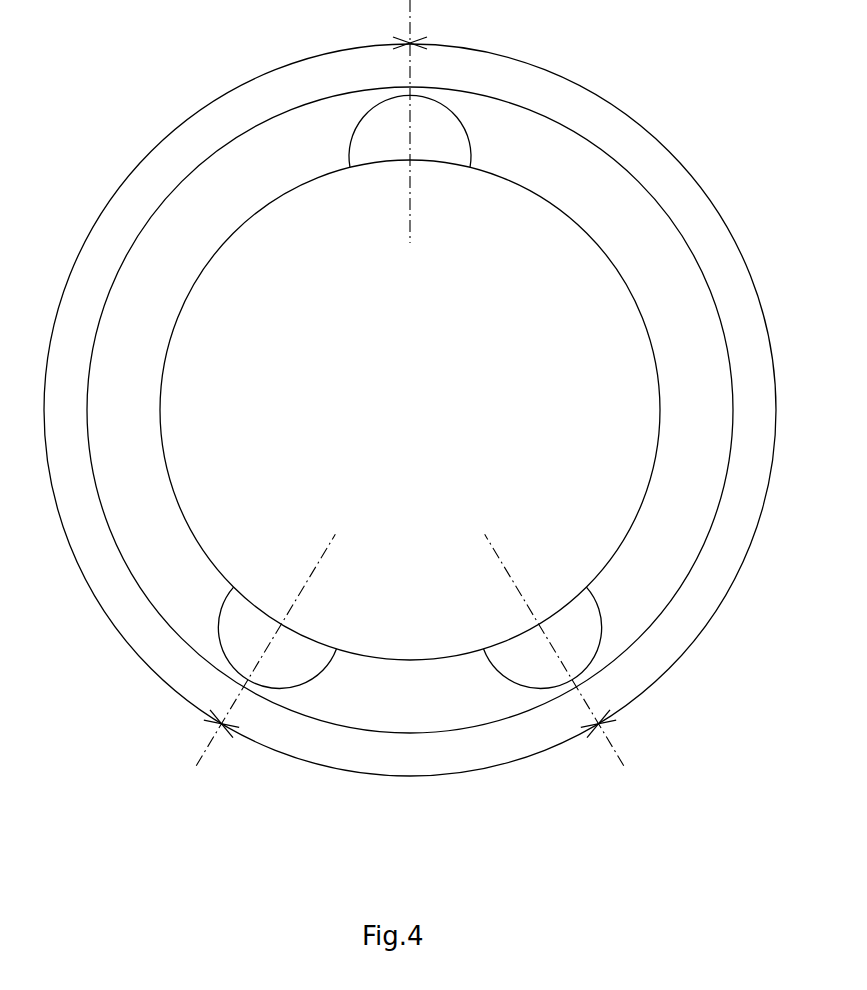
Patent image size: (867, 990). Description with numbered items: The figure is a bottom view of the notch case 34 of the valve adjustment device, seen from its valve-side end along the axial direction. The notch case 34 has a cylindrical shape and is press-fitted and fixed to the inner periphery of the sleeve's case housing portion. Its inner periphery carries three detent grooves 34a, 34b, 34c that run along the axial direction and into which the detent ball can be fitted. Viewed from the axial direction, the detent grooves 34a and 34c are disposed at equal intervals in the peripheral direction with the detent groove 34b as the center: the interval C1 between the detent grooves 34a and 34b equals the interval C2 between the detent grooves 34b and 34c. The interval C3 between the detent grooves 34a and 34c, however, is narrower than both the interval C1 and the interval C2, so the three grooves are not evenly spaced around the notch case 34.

The interval between detent grooves 34a and 34b C1 is at (175, 128).
The interval between detent grooves 34b and 34c C2 is at (683, 165).
The interval between detent grooves 34a and 34c C3 is at (450, 774).
The notch case 34 is at (645, 341).
The detent groove 34a is at (231, 605).
The detent groove 34b is at (452, 137).
The detent groove 34c is at (586, 604).